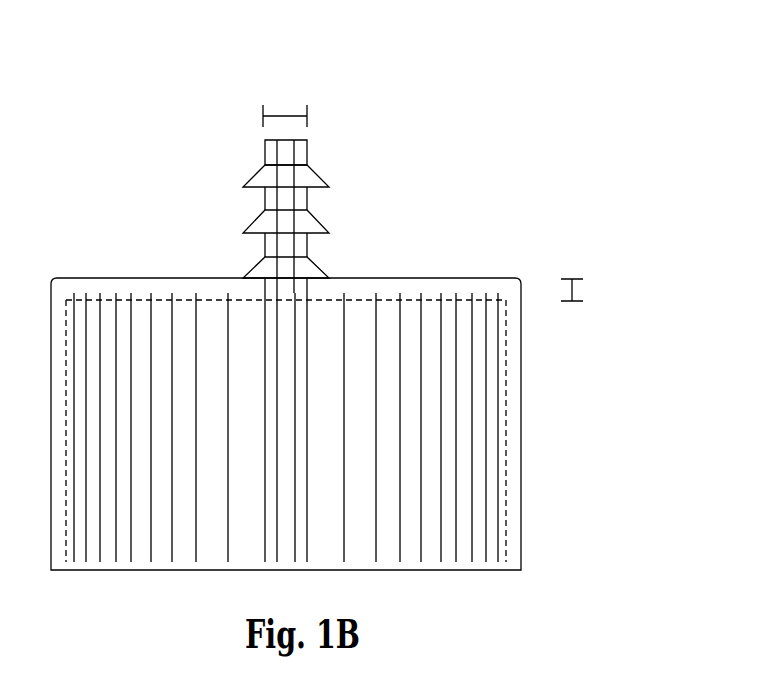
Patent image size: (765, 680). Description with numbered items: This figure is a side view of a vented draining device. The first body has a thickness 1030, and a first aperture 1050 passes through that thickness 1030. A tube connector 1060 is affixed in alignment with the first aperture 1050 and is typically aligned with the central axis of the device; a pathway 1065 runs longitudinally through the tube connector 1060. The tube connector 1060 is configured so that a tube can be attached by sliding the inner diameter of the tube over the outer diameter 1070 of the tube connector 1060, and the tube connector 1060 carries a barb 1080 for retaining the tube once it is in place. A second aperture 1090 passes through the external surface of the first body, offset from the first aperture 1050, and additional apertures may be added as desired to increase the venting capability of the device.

The thickness 1030 is at (601, 288).
The first aperture 1050 is at (263, 302).
The tube connector 1060 is at (304, 164).
The pathway 1065 is at (286, 141).
The outer diameter 1070 is at (278, 92).
The barb 1080 is at (326, 178).
The second aperture 1090 is at (435, 288).